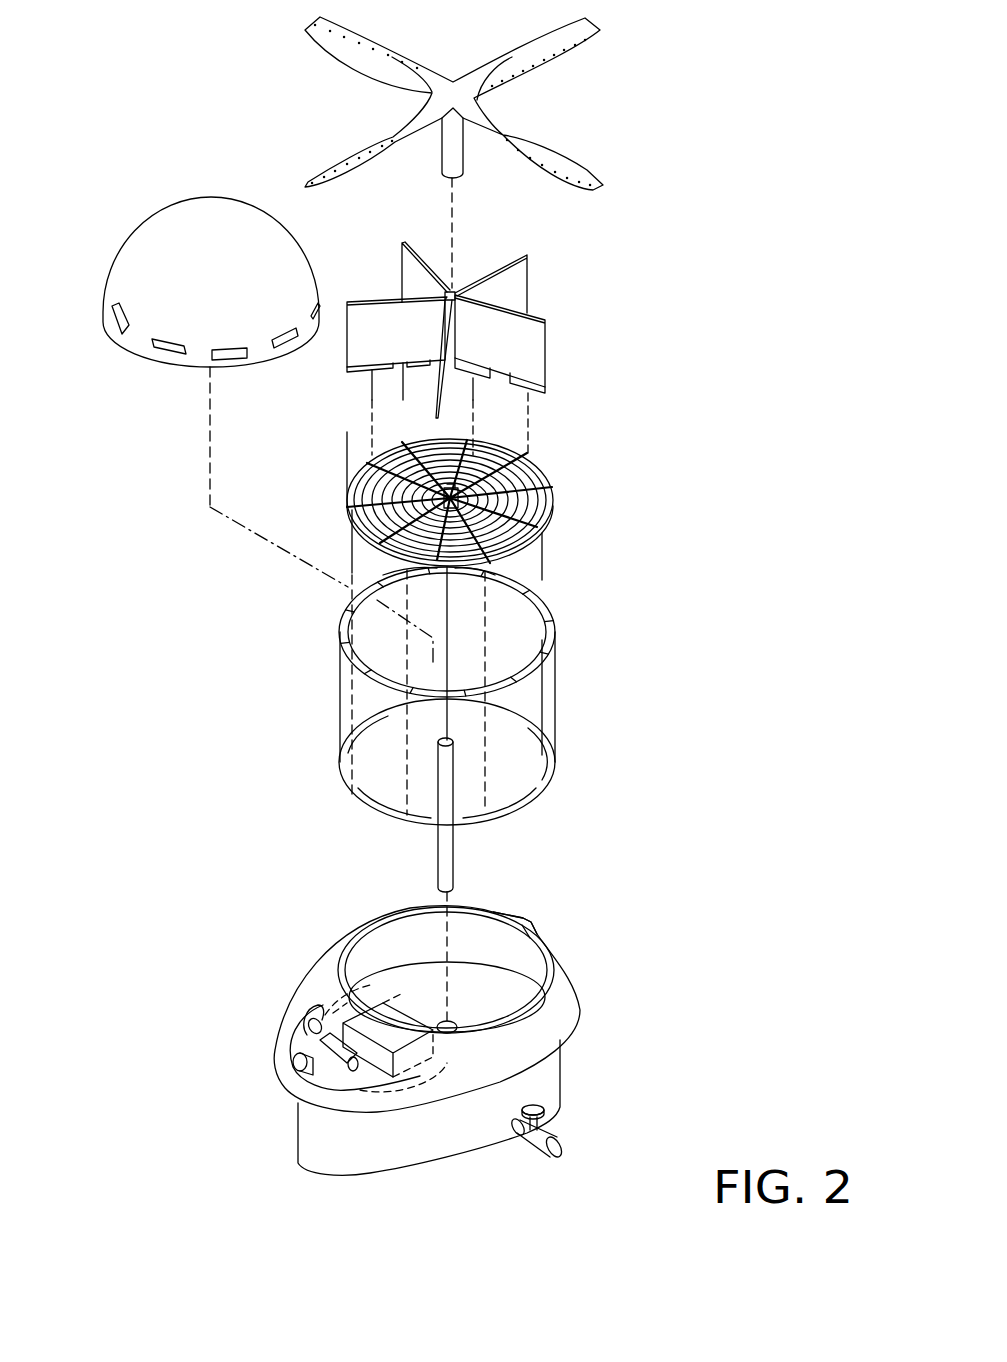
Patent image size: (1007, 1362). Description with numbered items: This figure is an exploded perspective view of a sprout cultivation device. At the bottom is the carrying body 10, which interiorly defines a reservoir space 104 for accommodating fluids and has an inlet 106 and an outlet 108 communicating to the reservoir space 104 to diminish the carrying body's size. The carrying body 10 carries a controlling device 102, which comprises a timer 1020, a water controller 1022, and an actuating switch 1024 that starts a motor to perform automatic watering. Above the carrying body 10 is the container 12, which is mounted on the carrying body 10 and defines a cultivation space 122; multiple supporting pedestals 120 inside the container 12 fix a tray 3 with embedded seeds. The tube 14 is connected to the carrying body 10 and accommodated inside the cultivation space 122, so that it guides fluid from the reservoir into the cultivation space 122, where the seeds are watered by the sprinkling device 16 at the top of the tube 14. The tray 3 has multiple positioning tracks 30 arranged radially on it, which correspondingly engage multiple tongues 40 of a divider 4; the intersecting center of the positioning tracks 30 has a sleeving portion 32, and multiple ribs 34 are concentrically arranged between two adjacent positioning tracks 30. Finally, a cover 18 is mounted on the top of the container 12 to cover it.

The carrying body 10 is at (547, 1083).
The controlling device 102 is at (150, 987).
The timer 1020 is at (310, 1023).
The water controller 1022 is at (300, 1077).
The actuating switch 1024 is at (298, 1063).
The reservoir space 104 is at (382, 947).
The inlet 106 is at (528, 928).
The outlet 108 is at (562, 1127).
The container 12 is at (345, 702).
The supporting pedestals 120 is at (553, 757).
The cultivation space 122 is at (367, 625).
The tube 14 is at (447, 778).
The sprinkling device 16 is at (600, 25).
The cover 18 is at (135, 332).
The tray 3 is at (537, 507).
The positioning tracks 30 is at (527, 455).
The sleeving portion 32 is at (365, 465).
The ribs 34 is at (350, 495).
The divider 4 is at (535, 342).
The tongues 40 is at (545, 390).